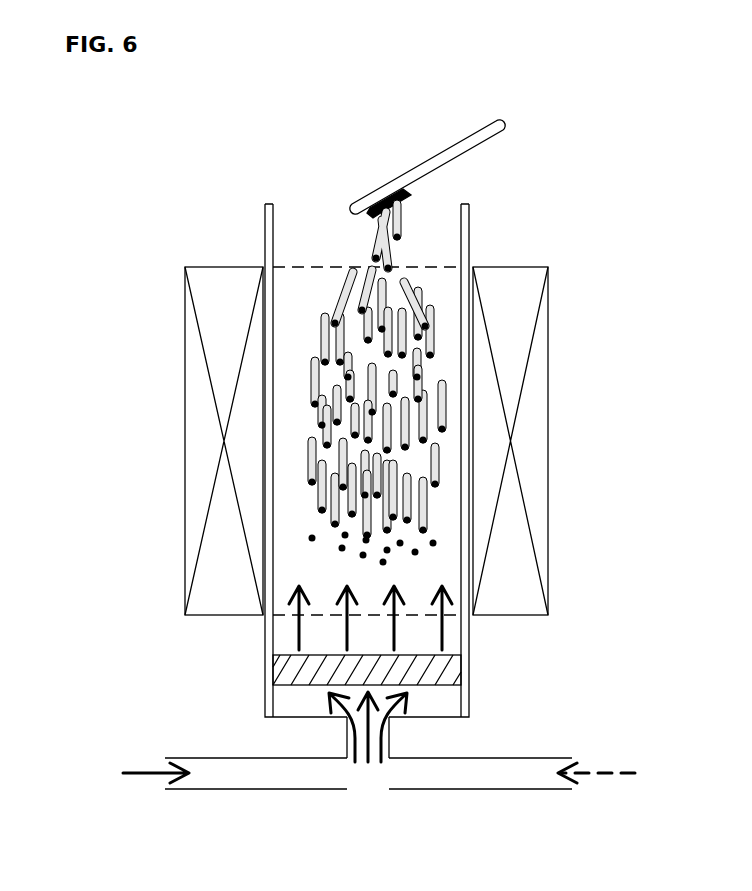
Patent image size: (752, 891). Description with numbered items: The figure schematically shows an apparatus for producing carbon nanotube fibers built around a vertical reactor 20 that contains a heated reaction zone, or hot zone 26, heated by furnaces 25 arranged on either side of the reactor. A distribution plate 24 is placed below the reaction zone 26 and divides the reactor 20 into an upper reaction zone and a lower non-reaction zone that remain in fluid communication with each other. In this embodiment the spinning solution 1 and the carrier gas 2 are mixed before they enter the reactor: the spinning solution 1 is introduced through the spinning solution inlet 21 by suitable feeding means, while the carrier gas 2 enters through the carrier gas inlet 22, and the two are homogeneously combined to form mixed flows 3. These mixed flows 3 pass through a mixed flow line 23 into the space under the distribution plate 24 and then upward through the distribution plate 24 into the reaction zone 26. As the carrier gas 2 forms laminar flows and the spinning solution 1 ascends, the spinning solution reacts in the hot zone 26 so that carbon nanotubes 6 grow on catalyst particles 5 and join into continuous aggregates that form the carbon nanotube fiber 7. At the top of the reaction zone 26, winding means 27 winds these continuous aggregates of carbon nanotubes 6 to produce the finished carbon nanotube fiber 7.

The spinning solution 1 is at (607, 774).
The carrier gas 2 is at (147, 774).
The mixed flow 3 is at (348, 628).
The catalyst particles 5 is at (310, 538).
The carbon nanotubes 6 is at (305, 392).
The carbon nanotube fiber 7 is at (392, 178).
The reactor 20 is at (468, 267).
The spinning solution inlet 21 is at (537, 790).
The carrier gas inlet 22 is at (220, 790).
The mixed flow line 23 is at (347, 737).
The distribution plate 24 is at (290, 672).
The furnace 25 is at (203, 453).
The hot zone 26 is at (290, 318).
The winding means 27 is at (468, 153).